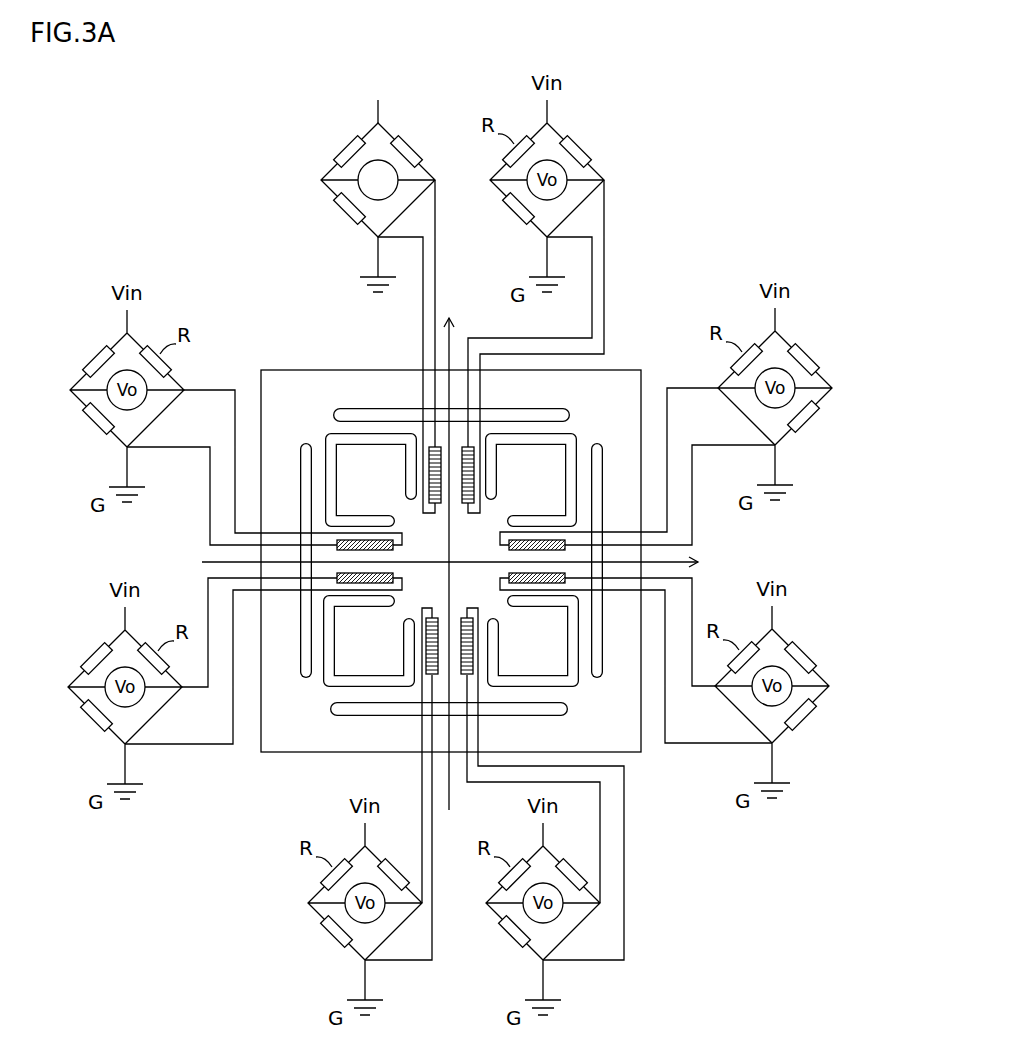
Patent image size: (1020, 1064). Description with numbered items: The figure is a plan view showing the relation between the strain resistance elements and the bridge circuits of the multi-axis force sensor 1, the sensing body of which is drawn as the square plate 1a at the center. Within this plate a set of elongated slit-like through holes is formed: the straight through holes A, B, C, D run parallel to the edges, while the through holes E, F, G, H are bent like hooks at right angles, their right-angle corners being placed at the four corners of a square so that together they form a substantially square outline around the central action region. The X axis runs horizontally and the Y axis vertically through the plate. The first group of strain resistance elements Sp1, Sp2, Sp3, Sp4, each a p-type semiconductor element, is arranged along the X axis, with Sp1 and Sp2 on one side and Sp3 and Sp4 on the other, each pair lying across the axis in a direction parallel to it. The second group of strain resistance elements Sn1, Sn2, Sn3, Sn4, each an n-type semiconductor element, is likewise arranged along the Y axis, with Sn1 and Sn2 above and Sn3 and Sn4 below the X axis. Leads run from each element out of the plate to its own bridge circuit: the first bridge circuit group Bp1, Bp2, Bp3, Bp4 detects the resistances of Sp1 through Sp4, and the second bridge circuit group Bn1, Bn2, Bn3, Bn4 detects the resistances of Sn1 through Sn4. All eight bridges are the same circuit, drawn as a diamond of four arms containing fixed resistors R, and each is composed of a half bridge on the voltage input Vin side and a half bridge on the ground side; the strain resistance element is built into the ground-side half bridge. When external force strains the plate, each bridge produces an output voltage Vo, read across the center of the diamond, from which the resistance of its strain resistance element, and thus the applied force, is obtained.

The multi-axis force sensor 1 is at (694, 153).
The sensor substrate 1a is at (627, 369).
The second bridge circuit Bn1 is at (591, 136).
The second bridge circuit Bn2 is at (421, 136).
The second bridge circuit Bn3 is at (298, 931).
The second bridge circuit Bn4 is at (670, 931).
The first bridge circuit Bp1 is at (812, 634).
The first bridge circuit Bp2 is at (812, 339).
The first bridge circuit Bp3 is at (92, 343).
The first bridge circuit Bp4 is at (90, 641).
The strain resistance element Sn1 is at (475, 478).
The strain resistance element Sn2 is at (428, 478).
The strain resistance element Sn3 is at (426, 647).
The strain resistance element Sn4 is at (474, 647).
The strain resistance element Sp1 is at (510, 580).
The strain resistance element Sp2 is at (510, 547).
The strain resistance element Sp3 is at (391, 547).
The strain resistance element Sp4 is at (391, 580).
The through hole A is at (603, 660).
The through hole B is at (540, 408).
The through hole C is at (300, 478).
The through hole D is at (368, 716).
The through hole E is at (577, 688).
The through hole F is at (578, 438).
The through hole H is at (324, 688).
The resistor R is at (367, 168).
The output voltage Vo is at (378, 180).
The voltage input Vin is at (377, 97).
The X-axis X is at (461, 563).
The Y-axis Y is at (452, 544).